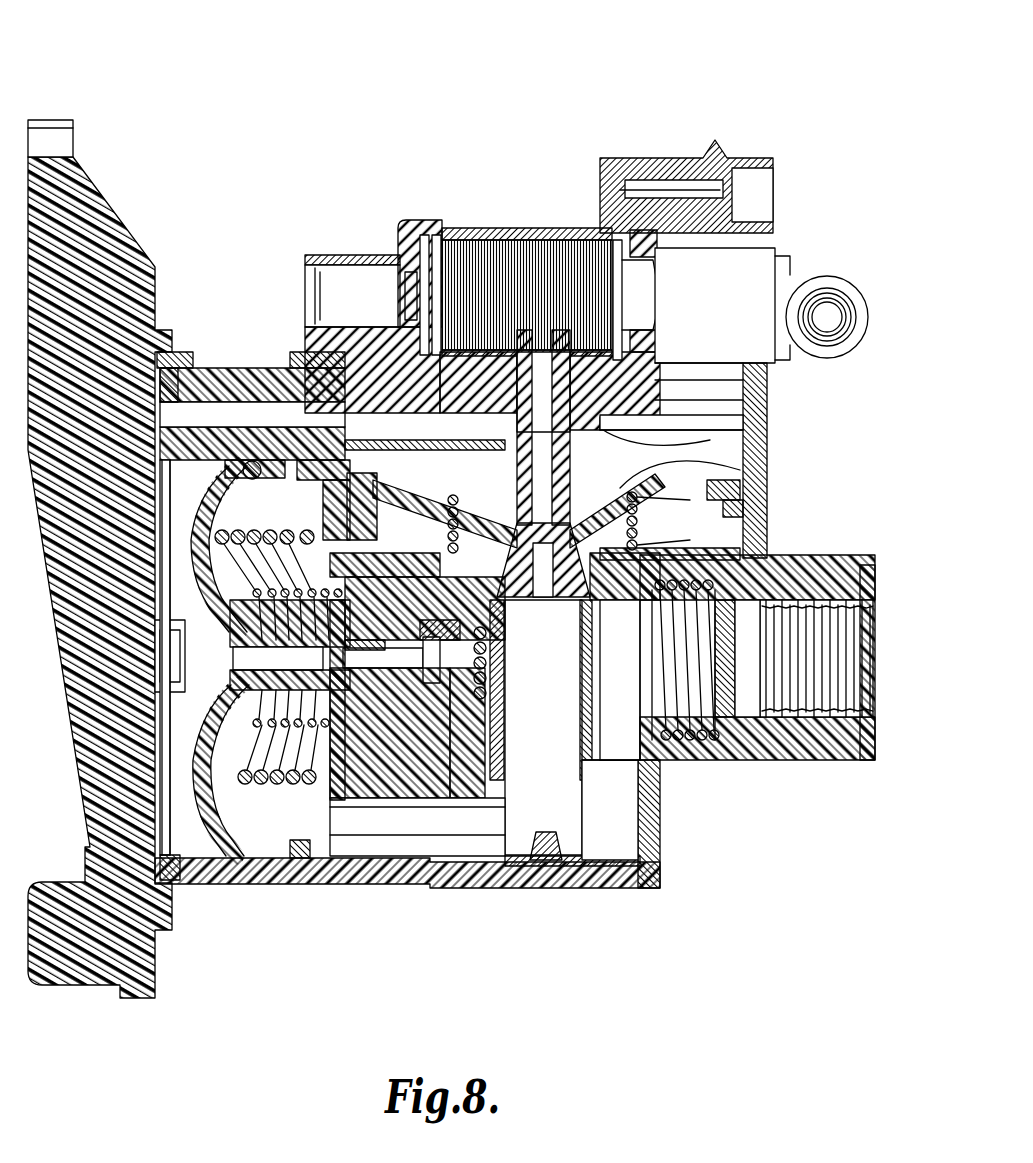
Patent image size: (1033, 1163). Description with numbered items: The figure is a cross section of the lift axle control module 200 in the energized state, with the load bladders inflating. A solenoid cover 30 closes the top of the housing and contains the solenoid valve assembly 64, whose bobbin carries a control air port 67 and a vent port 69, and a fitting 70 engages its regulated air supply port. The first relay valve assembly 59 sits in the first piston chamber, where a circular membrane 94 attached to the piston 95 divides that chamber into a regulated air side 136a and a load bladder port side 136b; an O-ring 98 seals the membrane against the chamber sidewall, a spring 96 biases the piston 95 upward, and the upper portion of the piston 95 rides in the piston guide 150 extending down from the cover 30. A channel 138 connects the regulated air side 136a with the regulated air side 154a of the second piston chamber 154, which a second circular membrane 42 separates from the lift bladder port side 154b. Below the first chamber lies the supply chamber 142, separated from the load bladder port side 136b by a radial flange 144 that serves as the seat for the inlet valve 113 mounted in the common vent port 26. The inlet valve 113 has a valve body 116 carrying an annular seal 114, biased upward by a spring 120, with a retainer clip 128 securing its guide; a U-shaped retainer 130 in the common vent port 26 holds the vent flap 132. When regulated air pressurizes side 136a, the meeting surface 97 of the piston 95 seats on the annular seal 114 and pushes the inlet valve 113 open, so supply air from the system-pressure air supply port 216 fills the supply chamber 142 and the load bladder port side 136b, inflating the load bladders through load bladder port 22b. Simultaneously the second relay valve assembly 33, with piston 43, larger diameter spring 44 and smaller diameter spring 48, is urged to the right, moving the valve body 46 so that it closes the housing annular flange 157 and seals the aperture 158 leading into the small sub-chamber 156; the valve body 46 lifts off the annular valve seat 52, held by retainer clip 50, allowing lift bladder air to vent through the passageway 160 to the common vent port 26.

The lift axle control module 200 is at (95, 112).
The common vent port 26 is at (603, 889).
The solenoid cover 30 is at (458, 235).
The second relay valve assembly 33 is at (215, 772).
The circular membrane 42 is at (200, 548).
The piston 43 is at (200, 700).
The larger diameter spring 44 is at (322, 812).
The valve body 46 is at (200, 632).
The smaller diameter spring 48 is at (250, 742).
The retainer clip 50 is at (332, 792).
The annular valve seat 52 is at (370, 742).
The first relay valve assembly 59 is at (355, 330).
The solenoid valve assembly 64 is at (432, 224).
The control air port 67 is at (700, 420).
The vent port 69 is at (308, 290).
The fitting 70 is at (822, 318).
The circular membrane 94 is at (690, 472).
The piston 95 is at (560, 455).
The spring 96 is at (420, 495).
The meeting surface 97 is at (720, 775).
The O-ring 98 is at (695, 515).
The inlet valve 113 is at (598, 812).
The annular seal 114 is at (668, 742).
The valve body 116 is at (660, 870).
The spring 120 is at (630, 780).
The retainer clip 128 is at (655, 830).
The U-shaped retainer 130 is at (522, 866).
The vent flap 132 is at (590, 882).
The regulated air side 136a is at (650, 442).
The load bladder port side 136b is at (700, 532).
The channel 138 is at (250, 412).
The supply chamber 142 is at (712, 762).
The radial flange 144 is at (700, 497).
The piston guide 150 is at (495, 470).
The second piston chamber 154 is at (228, 852).
The regulated air side 154a is at (182, 470).
The lift bladder port side 154b is at (300, 470).
The small sub-chamber 156 is at (400, 780).
The housing annular flange 157 is at (472, 790).
The aperture 158 is at (500, 820).
The passageway 160 is at (450, 845).
The system-pressure air supply port 216 is at (872, 690).
The load bladder port 22b is at (700, 548).